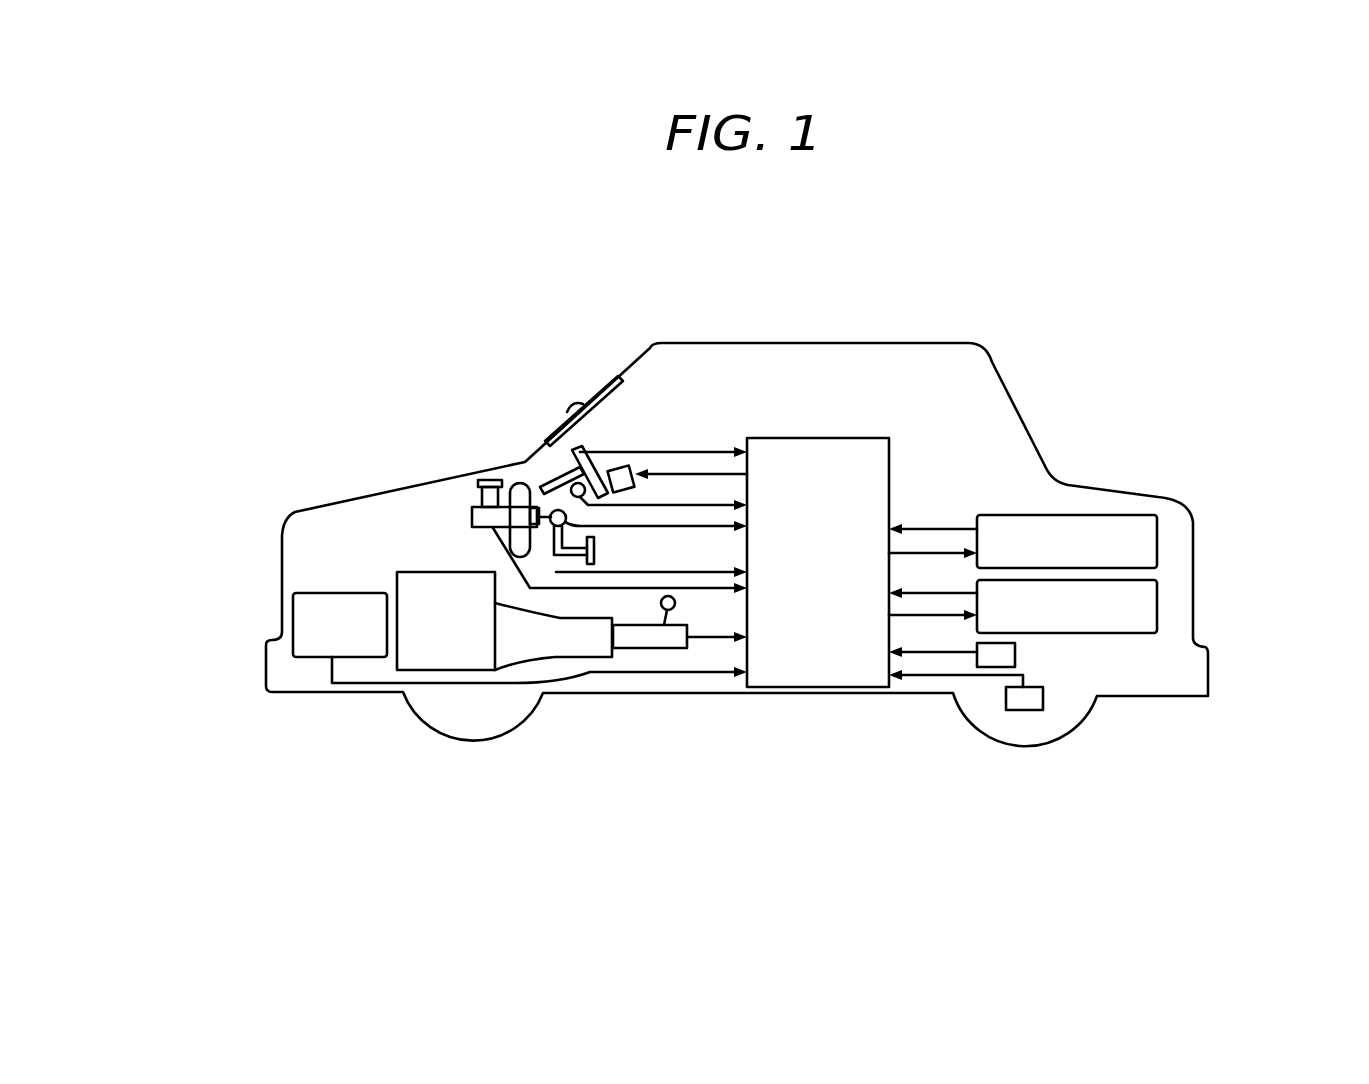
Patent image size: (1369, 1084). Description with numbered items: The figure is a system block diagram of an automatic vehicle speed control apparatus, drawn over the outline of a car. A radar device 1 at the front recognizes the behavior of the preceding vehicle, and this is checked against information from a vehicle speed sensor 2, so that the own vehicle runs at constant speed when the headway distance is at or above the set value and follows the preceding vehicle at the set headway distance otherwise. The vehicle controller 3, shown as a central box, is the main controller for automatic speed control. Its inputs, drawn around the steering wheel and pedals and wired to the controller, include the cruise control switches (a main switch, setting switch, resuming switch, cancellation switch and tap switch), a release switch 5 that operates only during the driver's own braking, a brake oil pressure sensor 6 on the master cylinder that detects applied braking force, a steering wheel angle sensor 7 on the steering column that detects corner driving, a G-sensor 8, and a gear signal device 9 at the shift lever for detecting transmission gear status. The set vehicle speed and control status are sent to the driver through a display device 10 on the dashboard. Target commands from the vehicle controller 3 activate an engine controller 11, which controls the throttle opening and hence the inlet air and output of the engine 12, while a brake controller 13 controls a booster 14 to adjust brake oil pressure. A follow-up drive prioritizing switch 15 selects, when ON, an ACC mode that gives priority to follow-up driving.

The radar device 1 is at (293, 610).
The vehicle speed sensor 2 is at (1018, 710).
The vehicle controller 3 is at (848, 438).
The release switch 5 is at (560, 557).
The brake oil pressure sensor 6 is at (472, 515).
The steering wheel angle sensor 7 is at (578, 447).
The G-sensor 8 is at (1015, 657).
The gear signal device 9 is at (648, 650).
The display device 10 is at (625, 465).
The engine controller 11 is at (1157, 540).
The engine 12 is at (423, 575).
The brake controller 13 is at (1157, 600).
The booster 14 is at (517, 483).
The follow-up drive prioritizing switch 15 is at (582, 497).